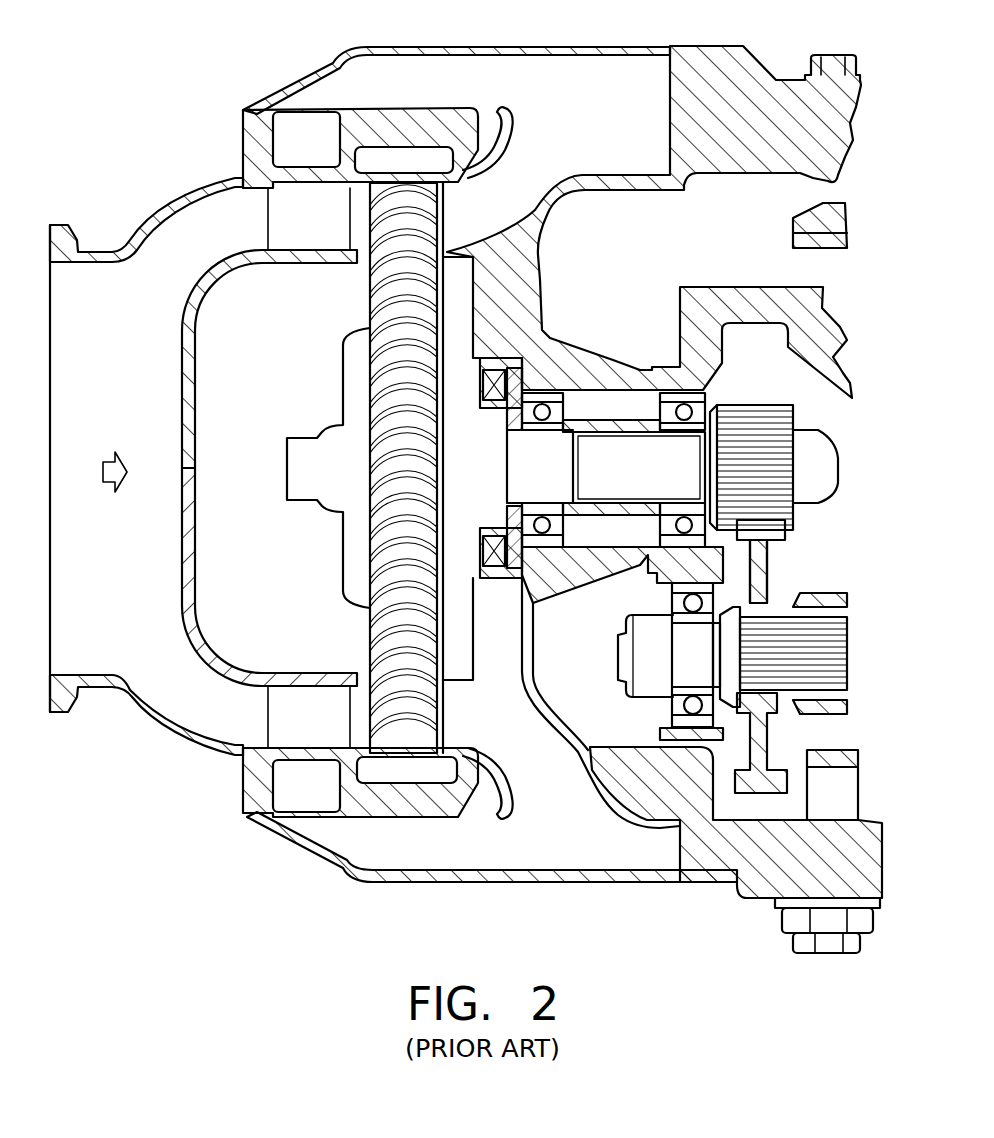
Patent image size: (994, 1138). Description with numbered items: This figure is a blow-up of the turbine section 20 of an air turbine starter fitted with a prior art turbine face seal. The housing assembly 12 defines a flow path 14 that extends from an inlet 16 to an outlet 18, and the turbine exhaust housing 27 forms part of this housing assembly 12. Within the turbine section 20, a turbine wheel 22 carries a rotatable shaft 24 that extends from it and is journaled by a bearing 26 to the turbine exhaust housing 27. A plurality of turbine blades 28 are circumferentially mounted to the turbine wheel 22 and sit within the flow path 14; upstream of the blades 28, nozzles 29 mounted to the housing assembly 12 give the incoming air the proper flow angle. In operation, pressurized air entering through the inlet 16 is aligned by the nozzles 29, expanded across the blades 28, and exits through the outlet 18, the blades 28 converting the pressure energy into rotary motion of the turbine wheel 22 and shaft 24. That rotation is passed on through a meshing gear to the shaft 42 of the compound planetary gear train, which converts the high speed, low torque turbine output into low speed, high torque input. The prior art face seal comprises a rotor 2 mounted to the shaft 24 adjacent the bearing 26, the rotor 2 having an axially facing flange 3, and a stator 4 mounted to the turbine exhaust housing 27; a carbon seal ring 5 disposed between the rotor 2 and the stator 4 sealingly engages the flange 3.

The rotor 2 is at (553, 537).
The axially facing flange 3 is at (508, 522).
The stator 4 is at (545, 330).
The carbon seal ring 5 is at (505, 568).
The first housing assembly 12 is at (476, 47).
The flow path 14 is at (127, 584).
The inlet 16 is at (104, 488).
The outlet 18 is at (608, 113).
The turbine section 20 is at (362, 468).
The turbine wheel 22 is at (345, 560).
The shaft 24 is at (808, 493).
The bearing 26 is at (658, 399).
The turbine exhaust housing 27 is at (545, 273).
The turbine blades 28 is at (440, 213).
The nozzles 29 is at (292, 225).
The shaft 42 is at (618, 653).